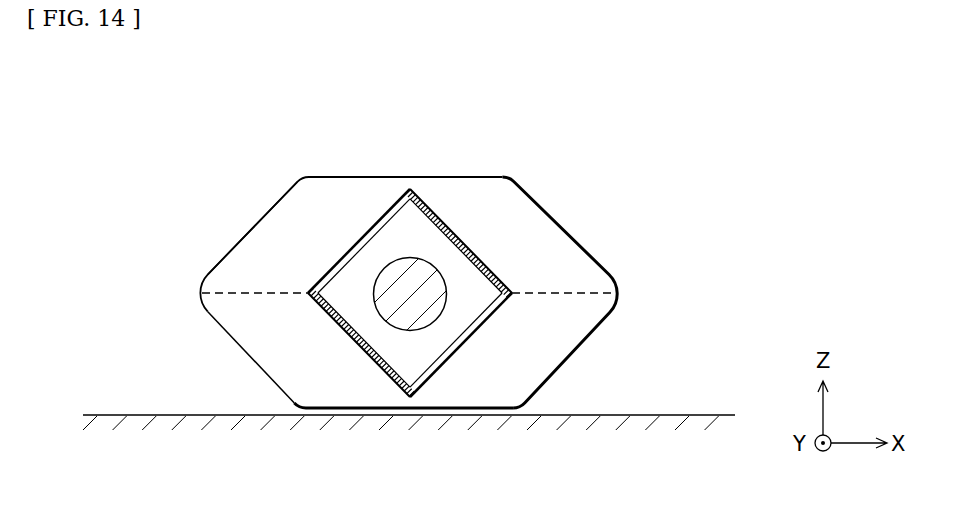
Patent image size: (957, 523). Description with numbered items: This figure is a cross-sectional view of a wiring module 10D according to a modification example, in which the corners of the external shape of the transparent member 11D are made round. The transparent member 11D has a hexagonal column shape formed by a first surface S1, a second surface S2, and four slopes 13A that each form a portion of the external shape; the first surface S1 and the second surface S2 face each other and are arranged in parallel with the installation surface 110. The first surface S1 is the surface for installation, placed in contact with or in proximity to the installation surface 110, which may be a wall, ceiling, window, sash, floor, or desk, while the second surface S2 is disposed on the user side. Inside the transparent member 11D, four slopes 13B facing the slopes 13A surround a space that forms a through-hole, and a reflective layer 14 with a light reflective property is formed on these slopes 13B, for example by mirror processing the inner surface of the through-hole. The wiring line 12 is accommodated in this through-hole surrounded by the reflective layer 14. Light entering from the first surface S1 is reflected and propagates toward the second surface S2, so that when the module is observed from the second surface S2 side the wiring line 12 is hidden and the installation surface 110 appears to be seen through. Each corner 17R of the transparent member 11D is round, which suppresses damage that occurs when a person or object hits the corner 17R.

The wiring module 10D is at (626, 115).
The transparent member 11D is at (563, 260).
The wiring line 12 is at (378, 300).
The slope 13A is at (240, 243).
The slope 13B is at (328, 305).
The reflective layer 14 is at (425, 196).
The corner 17R is at (293, 172).
The installation surface 110 is at (675, 414).
The first surface S1 is at (455, 414).
The second surface S2 is at (487, 177).